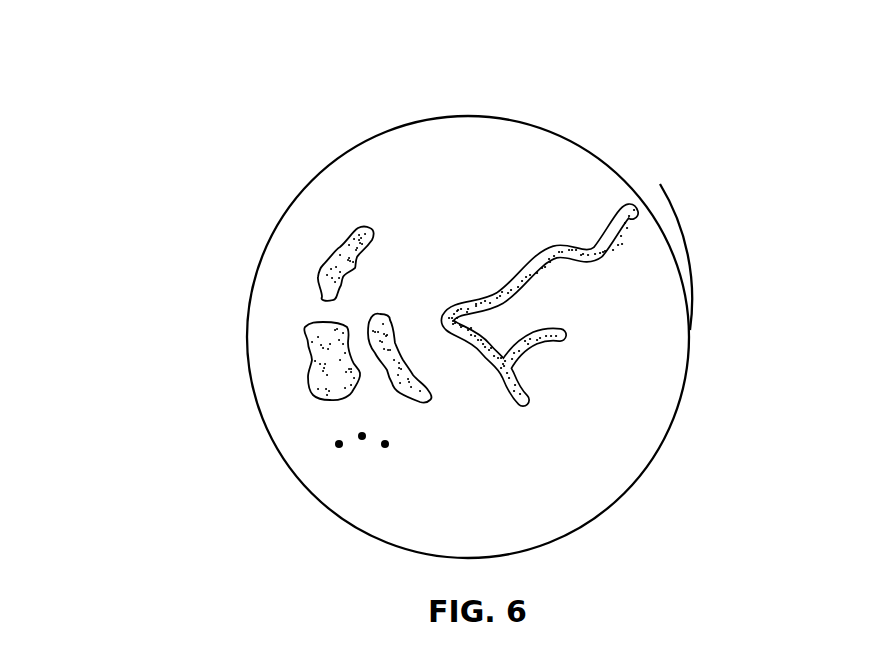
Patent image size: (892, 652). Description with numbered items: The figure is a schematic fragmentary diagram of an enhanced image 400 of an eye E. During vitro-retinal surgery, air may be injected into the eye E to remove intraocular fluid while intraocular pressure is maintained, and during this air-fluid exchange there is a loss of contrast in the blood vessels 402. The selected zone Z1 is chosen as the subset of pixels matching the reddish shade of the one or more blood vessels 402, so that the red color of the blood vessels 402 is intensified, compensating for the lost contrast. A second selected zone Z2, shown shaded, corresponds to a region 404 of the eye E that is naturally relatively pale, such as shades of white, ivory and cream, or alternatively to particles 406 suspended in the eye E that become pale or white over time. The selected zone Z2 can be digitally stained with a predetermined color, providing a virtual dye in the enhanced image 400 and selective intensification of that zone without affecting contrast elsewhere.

The enhanced image 400 is at (122, 38).
The blood vessels 402 is at (616, 280).
The region of the eye 404 is at (304, 312).
The particles 406 is at (357, 455).
The selected zone Z1 is at (505, 262).
The selected zone Z2 is at (298, 376).
The eye E is at (670, 193).